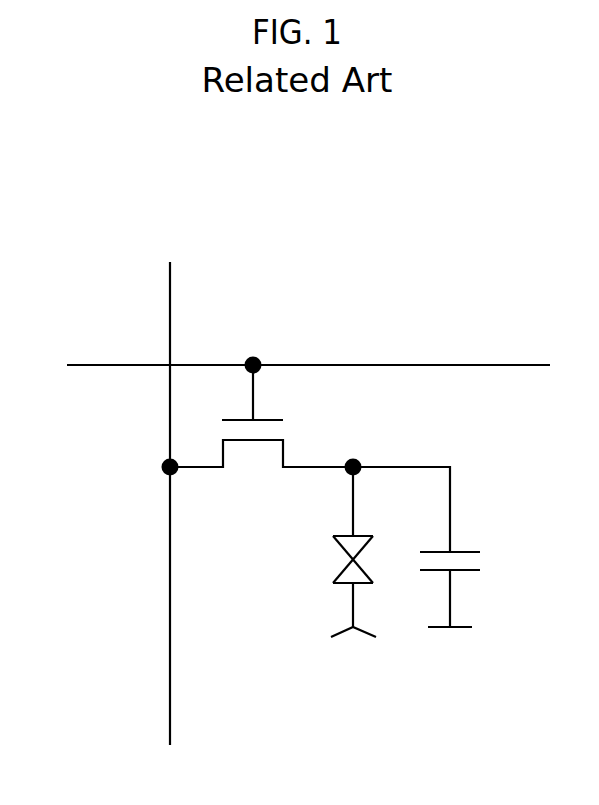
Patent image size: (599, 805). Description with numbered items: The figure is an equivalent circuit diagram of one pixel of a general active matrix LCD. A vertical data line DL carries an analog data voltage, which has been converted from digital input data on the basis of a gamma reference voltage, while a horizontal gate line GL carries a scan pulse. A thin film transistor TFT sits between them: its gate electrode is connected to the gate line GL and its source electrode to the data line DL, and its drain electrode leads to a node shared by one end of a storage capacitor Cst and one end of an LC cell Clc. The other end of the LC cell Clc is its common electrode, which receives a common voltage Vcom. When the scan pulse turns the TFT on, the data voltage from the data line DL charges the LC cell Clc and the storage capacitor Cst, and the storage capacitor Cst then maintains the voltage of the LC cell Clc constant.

The data line DL is at (170, 487).
The gate line GL is at (289, 364).
The thin film transistor TFT is at (258, 416).
The LC cell Clc is at (330, 521).
The storage capacitor Cst is at (435, 547).
The common voltage Vcom is at (353, 628).